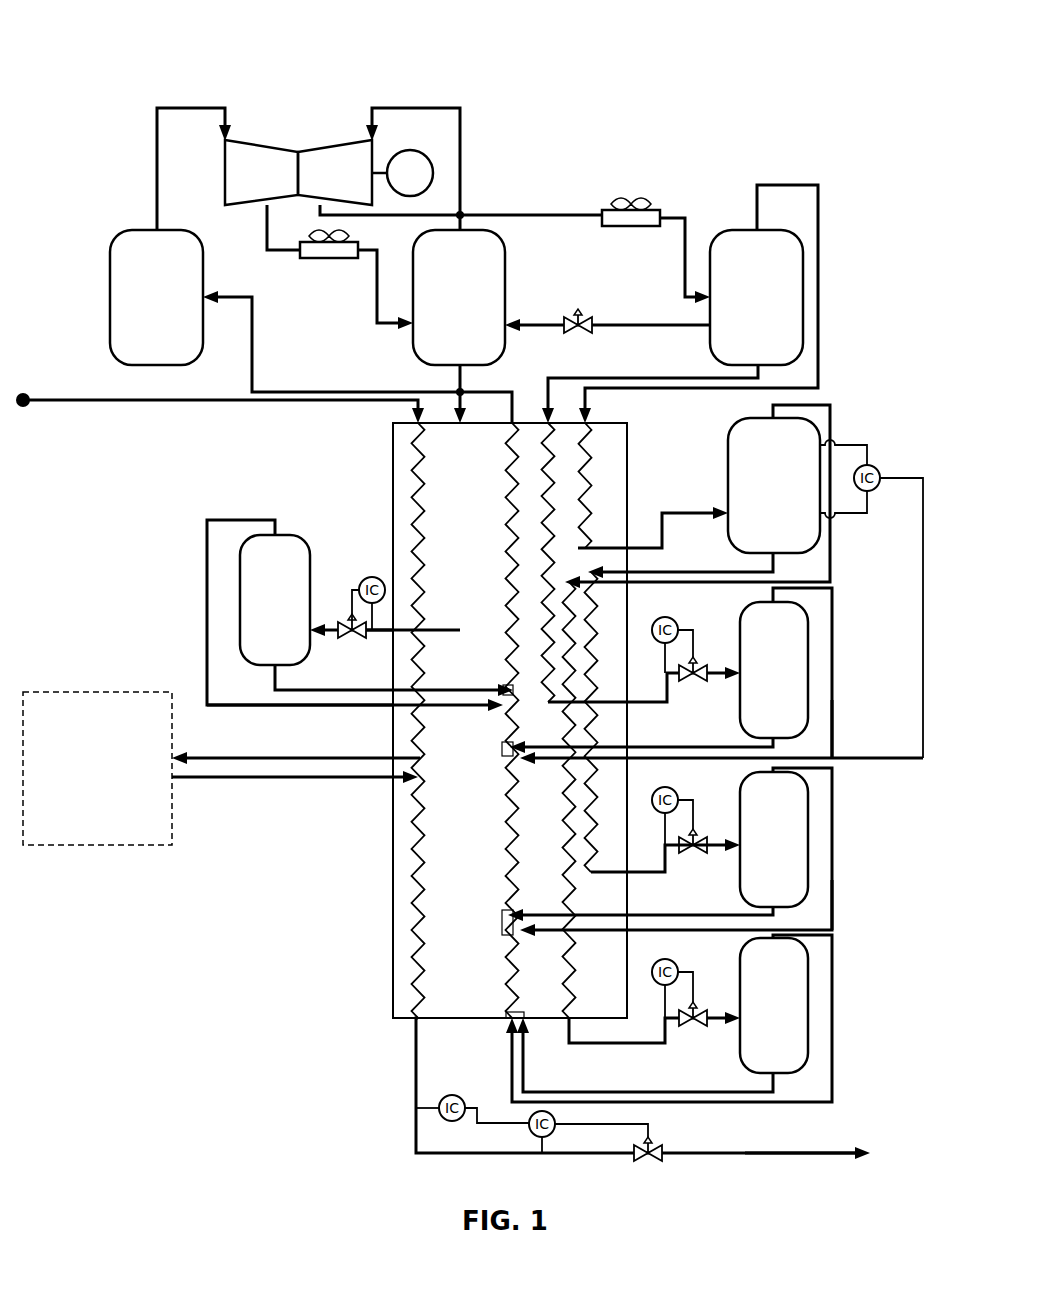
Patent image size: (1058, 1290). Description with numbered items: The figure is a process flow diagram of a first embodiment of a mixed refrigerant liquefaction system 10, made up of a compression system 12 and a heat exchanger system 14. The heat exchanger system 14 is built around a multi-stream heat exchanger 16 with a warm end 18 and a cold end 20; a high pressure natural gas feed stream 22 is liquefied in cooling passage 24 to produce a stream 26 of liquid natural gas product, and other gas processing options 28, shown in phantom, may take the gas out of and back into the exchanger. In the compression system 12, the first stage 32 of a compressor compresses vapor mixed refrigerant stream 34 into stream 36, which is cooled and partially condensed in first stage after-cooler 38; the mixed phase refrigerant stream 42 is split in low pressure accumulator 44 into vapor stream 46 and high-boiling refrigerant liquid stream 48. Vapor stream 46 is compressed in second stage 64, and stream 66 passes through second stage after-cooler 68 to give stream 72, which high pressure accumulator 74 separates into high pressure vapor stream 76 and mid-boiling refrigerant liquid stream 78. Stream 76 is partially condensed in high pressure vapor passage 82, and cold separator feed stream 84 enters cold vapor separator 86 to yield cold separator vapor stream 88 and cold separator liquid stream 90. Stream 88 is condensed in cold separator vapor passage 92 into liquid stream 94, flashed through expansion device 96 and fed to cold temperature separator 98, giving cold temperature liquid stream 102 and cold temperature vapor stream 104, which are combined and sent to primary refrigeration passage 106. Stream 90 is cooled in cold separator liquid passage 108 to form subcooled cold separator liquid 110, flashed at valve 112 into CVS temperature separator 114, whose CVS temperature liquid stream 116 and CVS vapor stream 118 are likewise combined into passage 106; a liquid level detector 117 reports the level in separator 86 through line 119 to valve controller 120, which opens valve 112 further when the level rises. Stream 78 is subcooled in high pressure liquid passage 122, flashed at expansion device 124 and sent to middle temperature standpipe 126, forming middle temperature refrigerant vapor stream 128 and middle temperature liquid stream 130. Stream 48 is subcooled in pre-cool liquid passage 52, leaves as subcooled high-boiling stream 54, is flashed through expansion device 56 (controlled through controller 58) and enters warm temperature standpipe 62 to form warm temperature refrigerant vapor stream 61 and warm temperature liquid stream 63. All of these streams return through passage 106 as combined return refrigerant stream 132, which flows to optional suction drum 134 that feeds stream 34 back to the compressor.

The mixed refrigerant liquefaction system 10 is at (148, 1047).
The compression system 12 is at (106, 44).
The heat exchanger system 14 is at (320, 922).
The multi-stream heat exchanger 16 is at (325, 482).
The warm end 18 is at (393, 464).
The cold end 20 is at (402, 1020).
The high pressure natural gas feed stream 22 is at (176, 403).
The cooling passage 24 is at (411, 492).
The stream of liquid natural gas product 26 is at (745, 1156).
The other gas processing options 28 is at (95, 848).
The first stage of compressor 32 is at (268, 144).
The vapor mixed refrigerant stream 34 is at (190, 108).
The first stage compressed stream 36 is at (267, 242).
The first stage after-cooler 38 is at (300, 254).
The mixed phase refrigerant stream 42 is at (377, 312).
The low pressure accumulator 44 is at (505, 285).
The vapor stream 46 is at (462, 168).
The high-boiling refrigerant liquid stream 48 is at (463, 406).
The pre-cool liquid passage 52 is at (415, 564).
The subcooled high-boiling stream 54 is at (388, 642).
The expansion device 56 is at (345, 642).
The control valve 58 is at (350, 616).
The warm temperature refrigerant vapor stream 61 is at (210, 520).
The warm temperature standpipe 62 is at (282, 535).
The warm temperature liquid stream 63 is at (290, 706).
The second stage of compressor 64 is at (345, 144).
The second stage compressed stream 66 is at (602, 215).
The second stage after-cooler 68 is at (636, 202).
The mixed phase stream 72 is at (685, 282).
The high pressure accumulator 74 is at (742, 230).
The high pressure vapor stream 76 is at (797, 185).
The mid-boiling refrigerant liquid stream 78 is at (758, 376).
The high pressure vapor passage 82 is at (591, 458).
The cold separator feed stream 84 is at (690, 512).
The cold vapor separator 86 is at (753, 420).
The cold separator vapor stream 88 is at (831, 406).
The cold separator liquid stream 90 is at (660, 572).
The cold separator vapor passage 92 is at (573, 608).
The liquid stream 94 is at (662, 1045).
The expansion device 96 is at (694, 1035).
The cold temperature separator 98 is at (810, 1012).
The cold temperature liquid stream 102 is at (774, 1092).
The cold temperature vapor stream 104 is at (835, 980).
The primary refrigeration passage 106 is at (508, 952).
The cold separator liquid passage 108 is at (598, 628).
The subcooled cold separator liquid 110 is at (650, 868).
The valve 112 is at (691, 856).
The CVS temperature separator 114 is at (836, 925).
The CVS temperature liquid stream 116 is at (690, 915).
The liquid level detector 117 is at (877, 468).
The CVS vapor stream 118 is at (835, 820).
The line 119 is at (923, 518).
The valve controller 120 is at (677, 792).
The high pressure liquid passage 122 is at (588, 428).
The expansion device 124 is at (697, 658).
The middle temperature standpipe 126 is at (836, 759).
The middle temperature refrigerant vapor stream 128 is at (835, 645).
The middle temperature liquid stream 130 is at (657, 747).
The combined return refrigerant stream 132 is at (463, 396).
The suction drum 134 is at (110, 303).